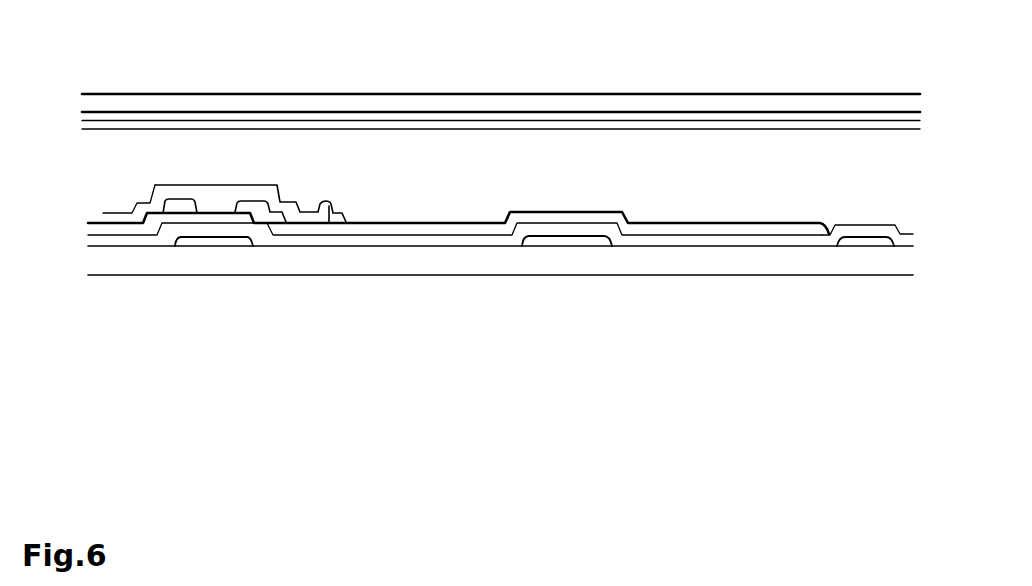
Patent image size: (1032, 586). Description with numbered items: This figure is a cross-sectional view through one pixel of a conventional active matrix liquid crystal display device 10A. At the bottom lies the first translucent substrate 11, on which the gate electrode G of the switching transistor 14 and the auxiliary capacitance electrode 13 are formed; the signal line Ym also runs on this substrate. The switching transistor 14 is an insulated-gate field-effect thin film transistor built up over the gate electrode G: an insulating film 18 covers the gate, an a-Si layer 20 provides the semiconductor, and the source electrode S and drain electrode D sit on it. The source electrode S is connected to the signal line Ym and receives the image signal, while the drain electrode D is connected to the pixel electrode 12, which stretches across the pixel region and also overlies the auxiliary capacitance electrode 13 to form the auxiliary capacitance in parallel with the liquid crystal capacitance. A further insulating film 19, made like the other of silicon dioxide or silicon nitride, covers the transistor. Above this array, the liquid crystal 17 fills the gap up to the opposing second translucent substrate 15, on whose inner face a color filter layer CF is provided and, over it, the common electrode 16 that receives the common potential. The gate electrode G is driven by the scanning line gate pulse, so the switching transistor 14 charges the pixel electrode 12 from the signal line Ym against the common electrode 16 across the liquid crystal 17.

The liquid crystal display device 10A is at (128, 45).
The second translucent substrate 15 is at (777, 104).
The color filter layer CF is at (600, 112).
The common electrode 16 is at (727, 128).
The liquid crystal 17 is at (440, 175).
The first translucent substrate 11 is at (428, 262).
The gate electrode G is at (204, 240).
The auxiliary capacitance electrode 13 is at (568, 247).
The signal line Ym is at (866, 240).
The switching transistor 14 is at (185, 257).
The insulating film 18 is at (900, 230).
The pixel electrode 12 is at (758, 222).
The source electrode S is at (100, 248).
The drain electrode D is at (298, 240).
The insulating film 19 is at (103, 213).
The a-Si layer 20 is at (172, 218).